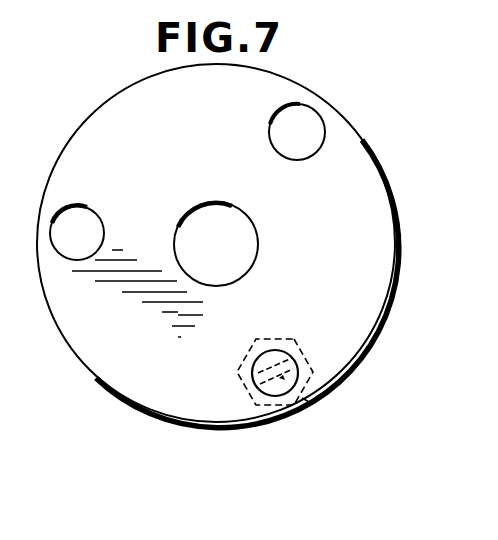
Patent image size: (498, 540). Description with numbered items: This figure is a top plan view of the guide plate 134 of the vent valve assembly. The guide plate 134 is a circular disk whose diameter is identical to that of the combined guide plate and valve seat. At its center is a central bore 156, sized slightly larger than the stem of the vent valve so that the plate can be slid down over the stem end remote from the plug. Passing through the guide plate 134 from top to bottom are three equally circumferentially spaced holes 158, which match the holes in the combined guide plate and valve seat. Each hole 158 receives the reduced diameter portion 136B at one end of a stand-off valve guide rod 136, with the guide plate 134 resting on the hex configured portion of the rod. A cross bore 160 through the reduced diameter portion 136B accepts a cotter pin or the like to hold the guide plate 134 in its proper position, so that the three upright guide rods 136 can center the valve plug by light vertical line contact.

The guide plate 134 is at (106, 393).
The central bore 156 is at (260, 238).
The circumferentially spaced holes 158 is at (270, 144).
The stand-off valve guide rod 136 is at (296, 339).
The reduced diameter portion 136B is at (272, 390).
The cross bore 160 is at (316, 402).